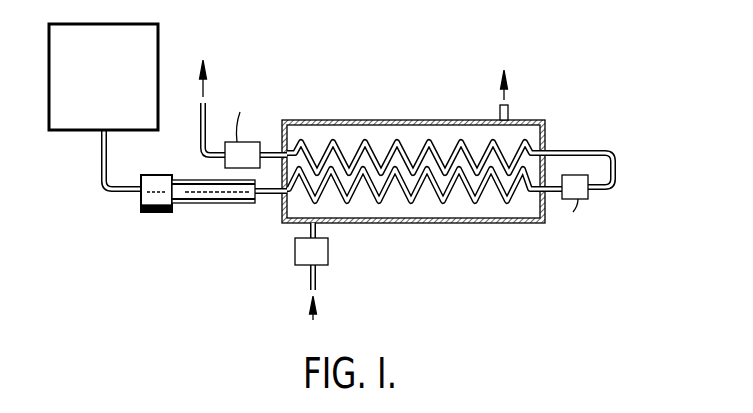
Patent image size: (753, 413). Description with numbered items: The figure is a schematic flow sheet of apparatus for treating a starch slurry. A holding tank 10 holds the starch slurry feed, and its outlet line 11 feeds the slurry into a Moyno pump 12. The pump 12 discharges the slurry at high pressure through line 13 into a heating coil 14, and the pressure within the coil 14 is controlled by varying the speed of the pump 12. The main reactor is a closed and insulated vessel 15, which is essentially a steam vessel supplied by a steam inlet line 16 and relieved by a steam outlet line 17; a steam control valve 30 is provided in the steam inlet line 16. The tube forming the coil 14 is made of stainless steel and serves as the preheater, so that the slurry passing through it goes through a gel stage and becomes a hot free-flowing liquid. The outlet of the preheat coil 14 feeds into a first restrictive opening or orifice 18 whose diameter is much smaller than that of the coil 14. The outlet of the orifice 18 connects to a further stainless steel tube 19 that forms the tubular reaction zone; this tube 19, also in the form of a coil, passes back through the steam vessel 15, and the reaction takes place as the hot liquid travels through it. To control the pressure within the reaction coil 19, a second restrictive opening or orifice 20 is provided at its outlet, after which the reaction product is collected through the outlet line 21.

The holding tank 10 is at (158, 43).
The outlet line 11 is at (101, 176).
The Moyno pump 12 is at (166, 212).
The line 13 is at (270, 196).
The heating coil 14 is at (452, 203).
The vessel 15 is at (507, 224).
The steam inlet line 16 is at (309, 233).
The steam outlet line 17 is at (509, 112).
The first restrictive opening or orifice 18 is at (590, 194).
The stainless steel tube 19 is at (589, 151).
The second restrictive opening or orifice 20 is at (226, 163).
The outlet line 21 is at (200, 113).
The steam control valve 30 is at (301, 260).